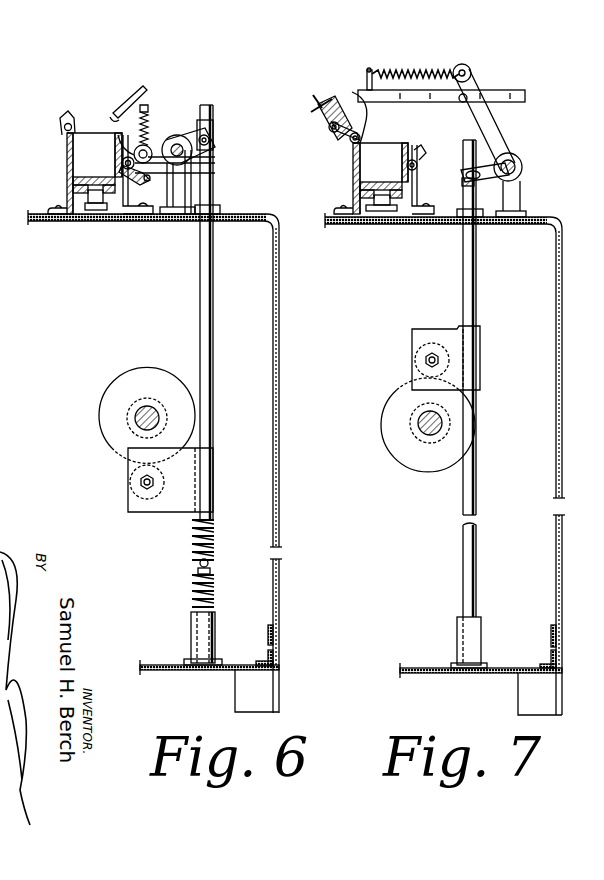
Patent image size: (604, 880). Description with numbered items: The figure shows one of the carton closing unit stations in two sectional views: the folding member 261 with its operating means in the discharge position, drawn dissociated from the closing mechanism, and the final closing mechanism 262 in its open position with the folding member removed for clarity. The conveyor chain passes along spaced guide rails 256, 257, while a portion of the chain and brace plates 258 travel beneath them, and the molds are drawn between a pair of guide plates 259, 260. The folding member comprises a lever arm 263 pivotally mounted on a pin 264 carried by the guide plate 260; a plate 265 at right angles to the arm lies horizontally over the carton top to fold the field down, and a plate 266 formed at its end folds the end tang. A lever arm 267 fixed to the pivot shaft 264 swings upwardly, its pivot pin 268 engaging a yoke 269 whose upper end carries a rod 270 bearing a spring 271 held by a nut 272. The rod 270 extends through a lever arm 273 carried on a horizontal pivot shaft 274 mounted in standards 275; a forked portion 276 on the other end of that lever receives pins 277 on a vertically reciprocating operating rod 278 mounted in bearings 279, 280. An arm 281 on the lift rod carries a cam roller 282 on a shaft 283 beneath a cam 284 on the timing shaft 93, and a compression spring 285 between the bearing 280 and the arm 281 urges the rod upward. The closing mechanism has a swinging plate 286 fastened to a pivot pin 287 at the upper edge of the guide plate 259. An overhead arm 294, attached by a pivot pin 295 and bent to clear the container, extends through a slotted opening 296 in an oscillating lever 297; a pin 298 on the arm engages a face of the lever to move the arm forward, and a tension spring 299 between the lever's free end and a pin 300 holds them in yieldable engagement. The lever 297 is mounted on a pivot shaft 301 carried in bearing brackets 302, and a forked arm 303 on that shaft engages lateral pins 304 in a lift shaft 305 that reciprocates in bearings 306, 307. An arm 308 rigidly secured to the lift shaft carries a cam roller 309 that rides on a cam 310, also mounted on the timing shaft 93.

In FIG. 6, the timing shaft 93 is at (135, 423).
In FIG. 7, the timing shaft 93 is at (428, 433).
In FIG. 6, the guide rail 256 is at (107, 195).
In FIG. 6, the guide rail 257 is at (75, 188).
In FIG. 6, the brace plates 258 is at (76, 224).
In FIG. 6, the guide plate 259 is at (67, 158).
In FIG. 7, the guide plate 259 is at (358, 216).
In FIG. 6, the guide plate 260 is at (126, 214).
In FIG. 6, the folding member 261 is at (159, 94).
In FIG. 7, the final closing mechanism 262 is at (307, 94).
In FIG. 6, the lever arm 263 is at (130, 148).
In FIG. 7, the lever arm 263 is at (424, 157).
In FIG. 6, the pin 264 is at (122, 162).
In FIG. 7, the pin 264 is at (417, 173).
In FIG. 6, the plate 265 is at (112, 117).
In FIG. 6, the plate 266 is at (134, 93).
In FIG. 6, the lever arm 267 is at (215, 164).
In FIG. 6, the pivot pin 268 is at (216, 175).
In FIG. 6, the yoke 269 is at (214, 155).
In FIG. 6, the rod 270 is at (149, 119).
In FIG. 6, the spring 271 is at (150, 130).
In FIG. 6, the nut 272 is at (147, 118).
In FIG. 6, the lever arm 273 is at (207, 128).
In FIG. 6, the pivot shaft 274 is at (210, 143).
In FIG. 6, the standards 275 is at (190, 214).
In FIG. 6, the forked portion 276 is at (192, 145).
In FIG. 6, the pins 277 is at (212, 136).
In FIG. 6, the operating rod 278 is at (206, 348).
In FIG. 6, the bearing 279 is at (222, 210).
In FIG. 6, the bearing 280 is at (217, 654).
In FIG. 6, the arm 281 is at (196, 470).
In FIG. 6, the cam roller 282 is at (133, 477).
In FIG. 6, the shaft 283 is at (59, 130).
In FIG. 6, the cam 284 is at (93, 388).
In FIG. 6, the compression spring 285 is at (212, 560).
In FIG. 7, the swinging plate 286 is at (351, 143).
In FIG. 7, the pivot pin 287 is at (353, 148).
In FIG. 7, the overhead arm 294 is at (510, 90).
In FIG. 7, the pivot pin 295 is at (332, 133).
In FIG. 7, the slotted opening 296 is at (472, 72).
In FIG. 7, the oscillating lever 297 is at (495, 127).
In FIG. 7, the pin 298 is at (461, 103).
In FIG. 7, the tension spring 299 is at (408, 72).
In FIG. 7, the pin 300 is at (366, 82).
In FIG. 7, the pivot shaft 301 is at (523, 167).
In FIG. 7, the bearing brackets 302 is at (521, 199).
In FIG. 7, the forked arm 303 is at (506, 164).
In FIG. 7, the lateral pins 304 is at (465, 186).
In FIG. 7, the lift shaft 305 is at (471, 310).
In FIG. 7, the bearing 306 is at (484, 222).
In FIG. 7, the bearing 307 is at (482, 646).
In FIG. 7, the arm 308 is at (455, 355).
In FIG. 7, the cam roller 309 is at (413, 360).
In FIG. 7, the cam 310 is at (382, 412).